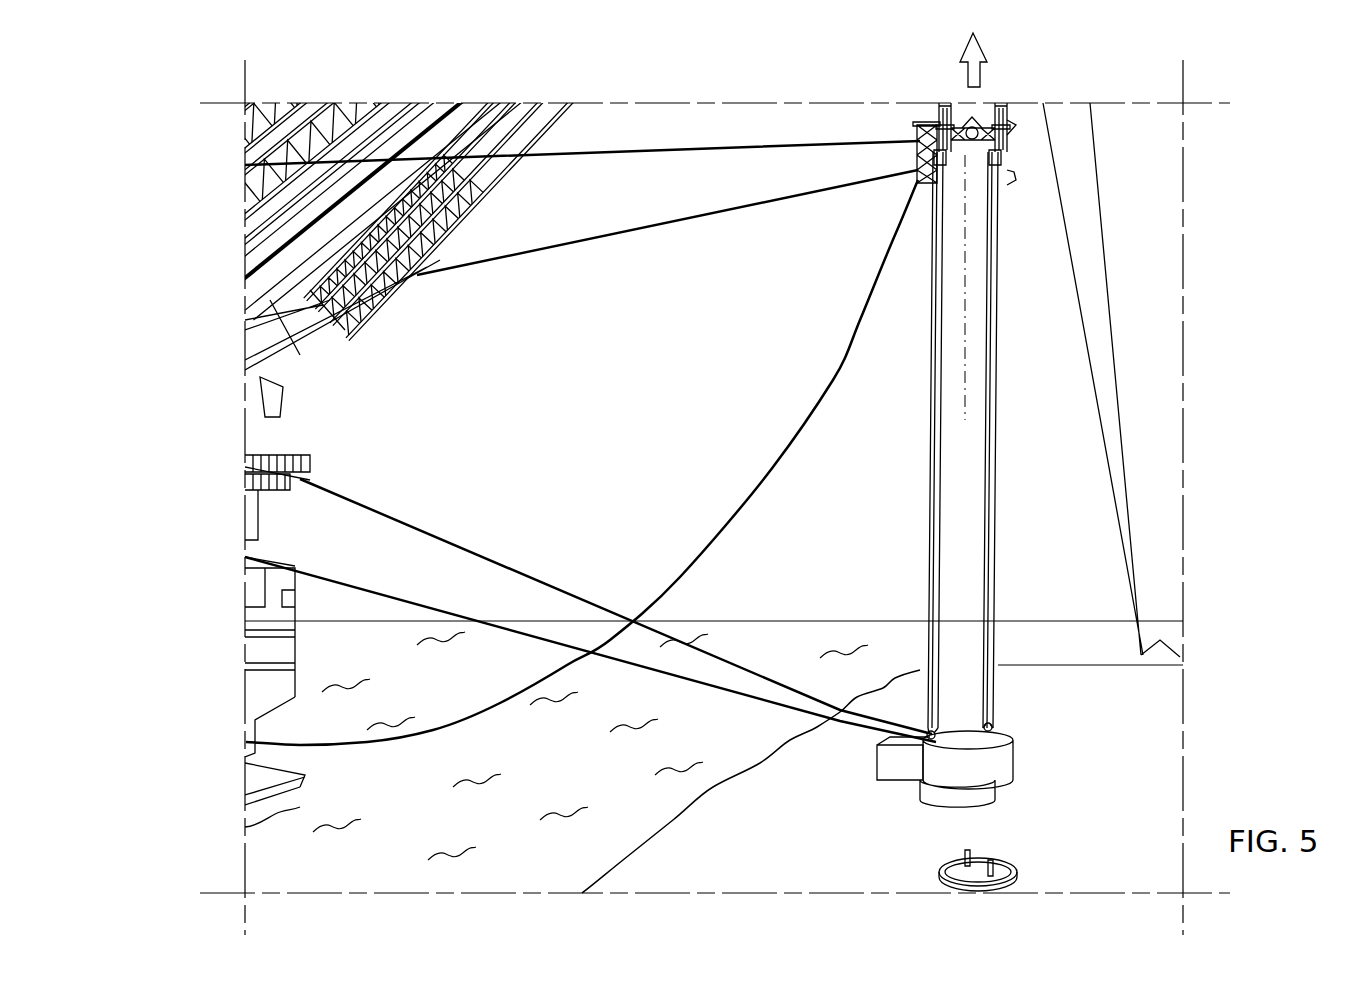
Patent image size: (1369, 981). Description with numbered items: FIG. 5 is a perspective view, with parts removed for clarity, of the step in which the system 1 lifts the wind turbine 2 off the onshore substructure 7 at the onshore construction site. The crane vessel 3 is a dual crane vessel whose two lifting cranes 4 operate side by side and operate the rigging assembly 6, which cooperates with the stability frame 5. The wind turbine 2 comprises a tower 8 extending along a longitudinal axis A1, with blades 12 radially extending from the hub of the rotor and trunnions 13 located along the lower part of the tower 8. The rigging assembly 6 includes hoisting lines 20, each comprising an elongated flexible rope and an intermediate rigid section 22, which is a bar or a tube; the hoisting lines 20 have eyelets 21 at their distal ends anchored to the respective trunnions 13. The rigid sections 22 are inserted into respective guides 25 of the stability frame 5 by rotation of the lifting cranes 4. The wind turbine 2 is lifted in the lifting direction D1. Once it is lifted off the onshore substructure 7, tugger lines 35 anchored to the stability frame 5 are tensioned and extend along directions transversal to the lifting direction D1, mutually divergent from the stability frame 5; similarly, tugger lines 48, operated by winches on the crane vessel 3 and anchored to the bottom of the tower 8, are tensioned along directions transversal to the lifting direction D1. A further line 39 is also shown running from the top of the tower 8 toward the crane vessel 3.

The system 1 is at (735, 94).
The wind turbine 2 is at (1139, 380).
The crane vessel 3 is at (412, 468).
The lifting cranes 4 is at (422, 84).
The stability frame 5 is at (970, 102).
The rigging assembly 6 is at (1110, 380).
The onshore substructure 7 is at (1017, 860).
The tower 8 is at (962, 439).
The blades 12 is at (1112, 348).
The trunnions 13 is at (1000, 733).
The hoisting lines 20 is at (930, 522).
The eyelets 21 is at (926, 742).
The intermediate rigid section 22 is at (945, 102).
The guides 25 is at (933, 100).
The tugger lines 35 is at (666, 153).
The catenary cable 39 is at (772, 465).
The tugger lines 48 is at (604, 606).
The longitudinal axis A1 is at (967, 368).
The lifting direction D1 is at (982, 70).